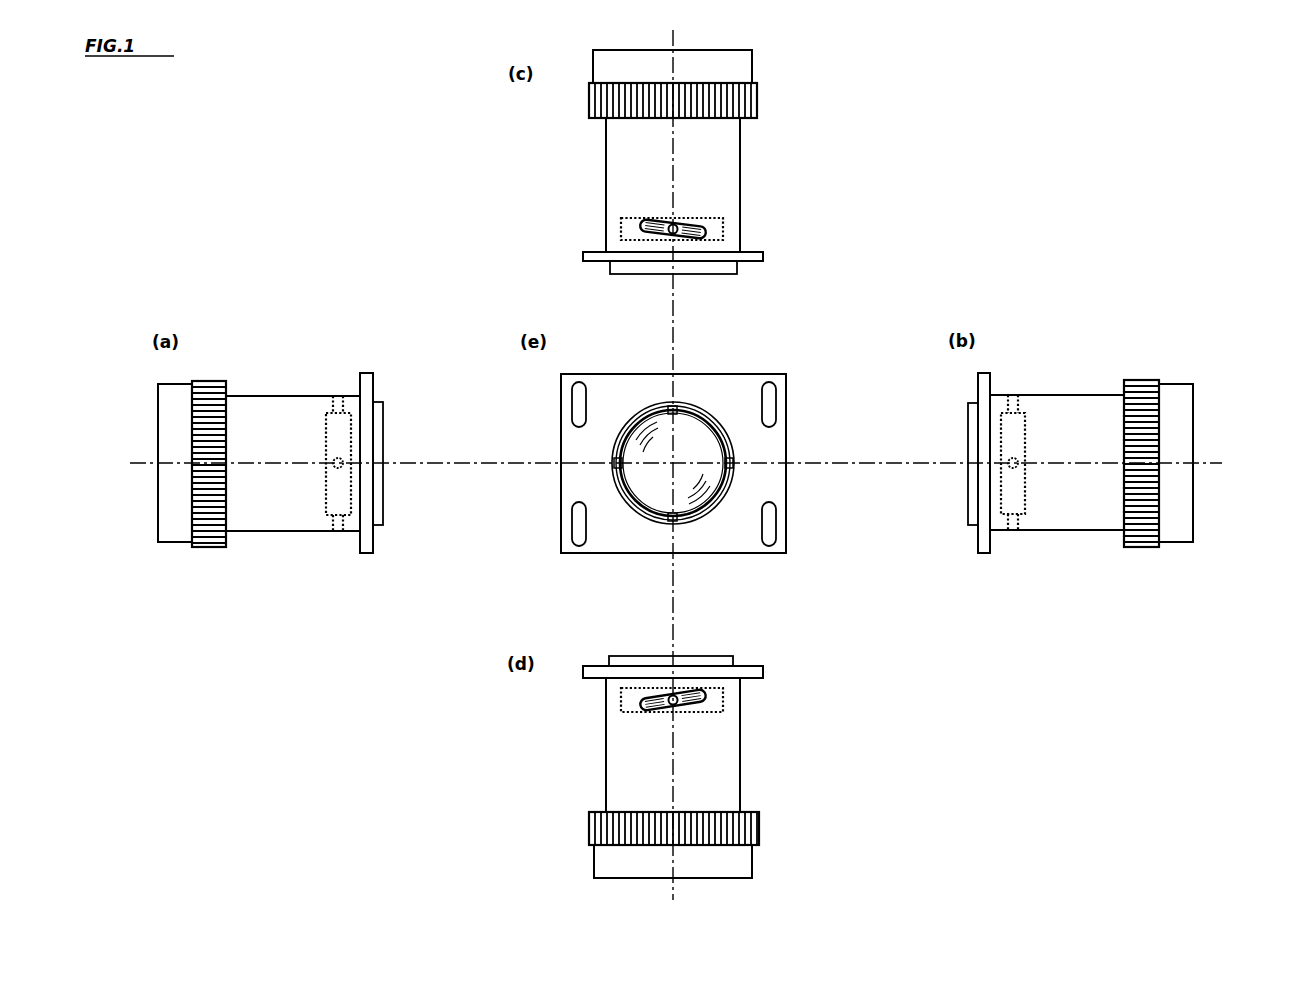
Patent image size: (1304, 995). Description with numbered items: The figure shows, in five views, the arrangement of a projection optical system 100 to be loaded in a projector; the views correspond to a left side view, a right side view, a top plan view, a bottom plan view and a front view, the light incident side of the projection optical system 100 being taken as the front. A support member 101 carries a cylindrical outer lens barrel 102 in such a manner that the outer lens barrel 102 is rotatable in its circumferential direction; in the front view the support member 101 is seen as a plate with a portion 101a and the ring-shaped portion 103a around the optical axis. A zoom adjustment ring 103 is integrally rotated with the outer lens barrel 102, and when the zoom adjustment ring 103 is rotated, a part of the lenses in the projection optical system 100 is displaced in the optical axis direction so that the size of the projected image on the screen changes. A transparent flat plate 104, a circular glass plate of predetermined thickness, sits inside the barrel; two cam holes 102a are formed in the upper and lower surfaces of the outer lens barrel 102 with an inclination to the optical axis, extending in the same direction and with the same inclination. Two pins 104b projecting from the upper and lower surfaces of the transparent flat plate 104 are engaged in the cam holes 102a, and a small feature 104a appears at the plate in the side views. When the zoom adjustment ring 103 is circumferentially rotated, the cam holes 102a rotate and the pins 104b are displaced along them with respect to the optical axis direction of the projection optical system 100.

The projection optical system 100 is at (1258, 79).
The support member 101 is at (590, 252).
The engagement tab 101a is at (676, 407).
The outer lens barrel 102 is at (298, 396).
The cam hole 102a is at (697, 223).
The zoom adjustment ring 103 is at (222, 380).
The lens ring 103a is at (616, 468).
The transparent flat plate 104 is at (327, 440).
The pivot screw 104a is at (340, 457).
The pin 104b is at (667, 222).